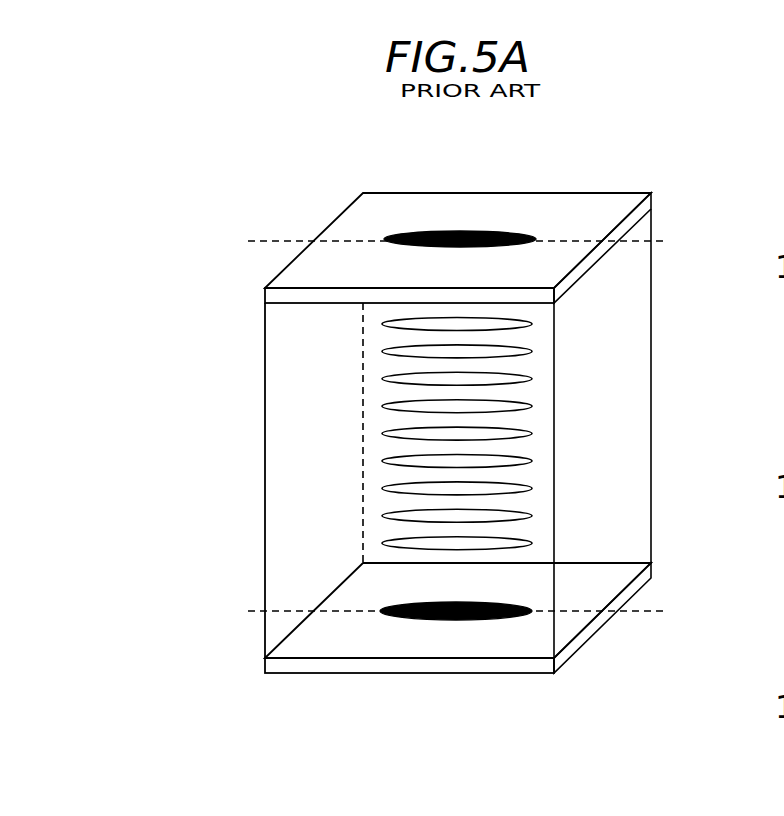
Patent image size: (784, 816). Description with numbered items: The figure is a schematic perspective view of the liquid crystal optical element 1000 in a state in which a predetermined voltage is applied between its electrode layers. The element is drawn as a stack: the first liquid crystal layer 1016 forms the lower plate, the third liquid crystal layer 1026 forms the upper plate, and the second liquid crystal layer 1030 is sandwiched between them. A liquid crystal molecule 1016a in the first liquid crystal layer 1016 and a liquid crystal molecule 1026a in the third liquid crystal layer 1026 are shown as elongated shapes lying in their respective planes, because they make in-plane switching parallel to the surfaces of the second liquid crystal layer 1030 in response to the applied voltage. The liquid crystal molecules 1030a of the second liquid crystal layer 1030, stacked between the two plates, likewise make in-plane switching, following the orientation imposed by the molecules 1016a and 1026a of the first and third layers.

The liquid crystal optical element 1000 is at (574, 185).
The third liquid crystal layer 1026 is at (275, 295).
The liquid crystal molecule 1026a is at (438, 235).
The second liquid crystal layer 1030 is at (205, 302).
The liquid crystal molecules 1030a is at (498, 435).
The first liquid crystal layer 1016 is at (275, 663).
The liquid crystal molecule 1016a is at (456, 620).